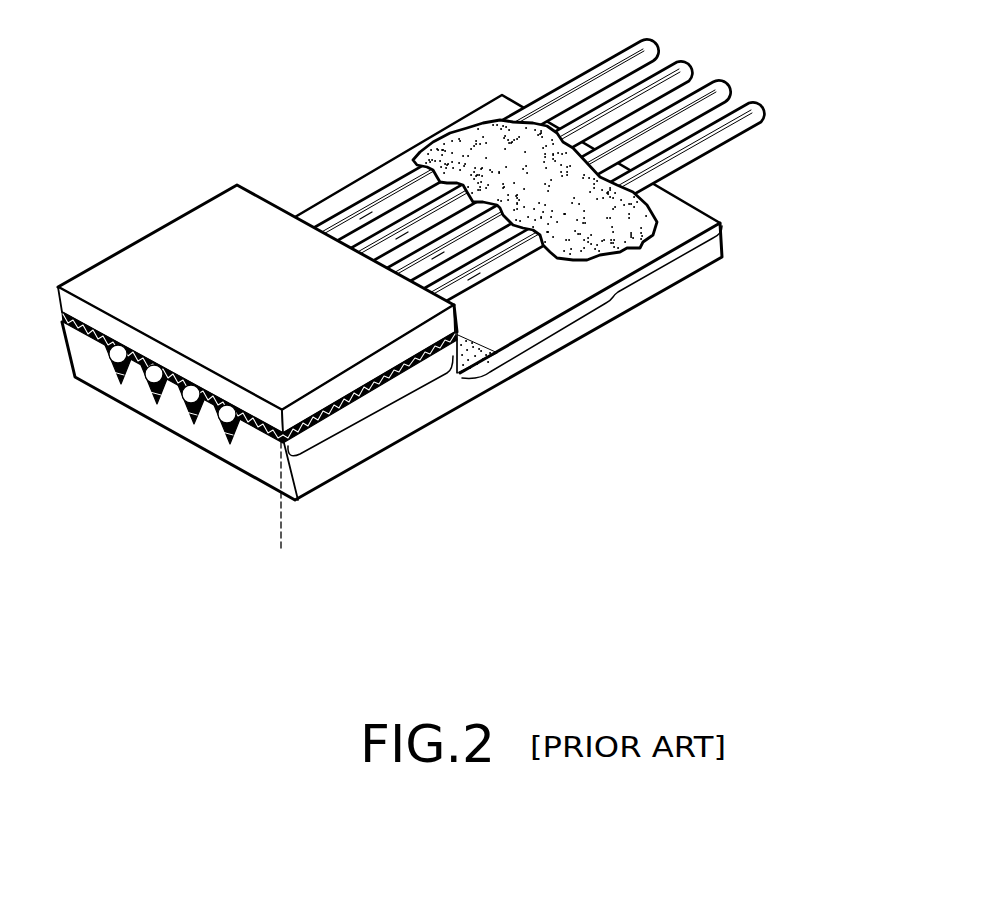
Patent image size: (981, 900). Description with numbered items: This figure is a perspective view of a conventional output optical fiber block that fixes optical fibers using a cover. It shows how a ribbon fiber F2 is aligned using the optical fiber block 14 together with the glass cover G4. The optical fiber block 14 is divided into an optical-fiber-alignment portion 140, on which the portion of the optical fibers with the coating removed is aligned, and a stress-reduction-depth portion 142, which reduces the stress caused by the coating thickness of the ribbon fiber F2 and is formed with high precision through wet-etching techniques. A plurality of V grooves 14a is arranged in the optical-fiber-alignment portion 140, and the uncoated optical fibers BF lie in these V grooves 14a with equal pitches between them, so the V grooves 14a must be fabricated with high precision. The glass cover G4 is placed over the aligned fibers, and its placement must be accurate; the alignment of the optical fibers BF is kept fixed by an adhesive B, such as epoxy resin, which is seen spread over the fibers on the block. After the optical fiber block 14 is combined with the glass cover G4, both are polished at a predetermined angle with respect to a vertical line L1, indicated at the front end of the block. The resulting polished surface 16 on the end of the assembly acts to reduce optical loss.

The optical fiber block 14 is at (452, 400).
The optical-fiber-alignment portion 140 is at (387, 413).
The stress-reduction-depth portion 142 is at (612, 298).
The V grooves 14a is at (230, 442).
The polished surface 16 is at (52, 287).
The glass cover G4 is at (182, 238).
The ribbon fiber F2 is at (584, 79).
The adhesive B is at (448, 128).
The optical fibers BF is at (243, 432).
The vertical line L1 is at (281, 509).